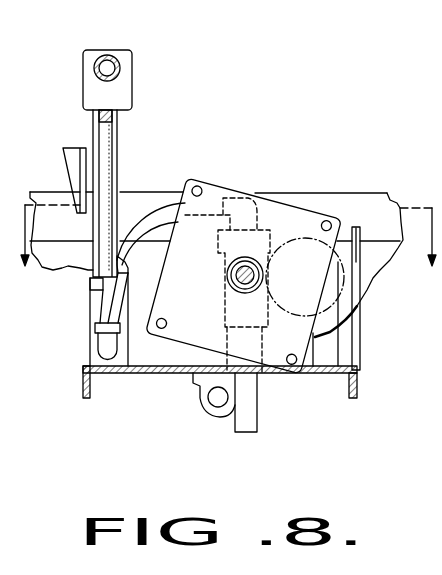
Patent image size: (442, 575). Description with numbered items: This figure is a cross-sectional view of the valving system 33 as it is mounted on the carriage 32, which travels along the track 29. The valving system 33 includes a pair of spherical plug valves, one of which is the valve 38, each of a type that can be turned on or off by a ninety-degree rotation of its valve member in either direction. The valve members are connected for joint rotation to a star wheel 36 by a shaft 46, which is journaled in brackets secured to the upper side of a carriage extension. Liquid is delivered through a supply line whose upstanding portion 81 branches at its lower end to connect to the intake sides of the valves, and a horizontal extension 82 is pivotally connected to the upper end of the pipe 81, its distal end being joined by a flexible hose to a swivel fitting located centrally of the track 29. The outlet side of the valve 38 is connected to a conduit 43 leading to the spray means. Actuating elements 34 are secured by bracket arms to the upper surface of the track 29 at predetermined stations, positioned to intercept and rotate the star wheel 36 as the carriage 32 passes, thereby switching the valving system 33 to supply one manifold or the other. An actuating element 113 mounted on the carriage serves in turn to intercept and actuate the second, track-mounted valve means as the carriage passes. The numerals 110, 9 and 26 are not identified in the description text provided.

The housing 110 is at (441, 6).
The horizontal extension 82 is at (121, 66).
The upstanding portion 81 is at (118, 137).
The actuating elements 34 is at (76, 207).
The track 29 is at (385, 172).
The section line 9- 9 is at (231, 252).
The valving system 33 is at (297, 170).
The star wheel 36 is at (205, 312).
The valve 38 is at (215, 331).
The shaft 46 is at (236, 273).
The actuating element 113 is at (360, 278).
The frame 26 is at (175, 401).
The carriage 32 is at (357, 380).
The conduit 43 is at (257, 411).